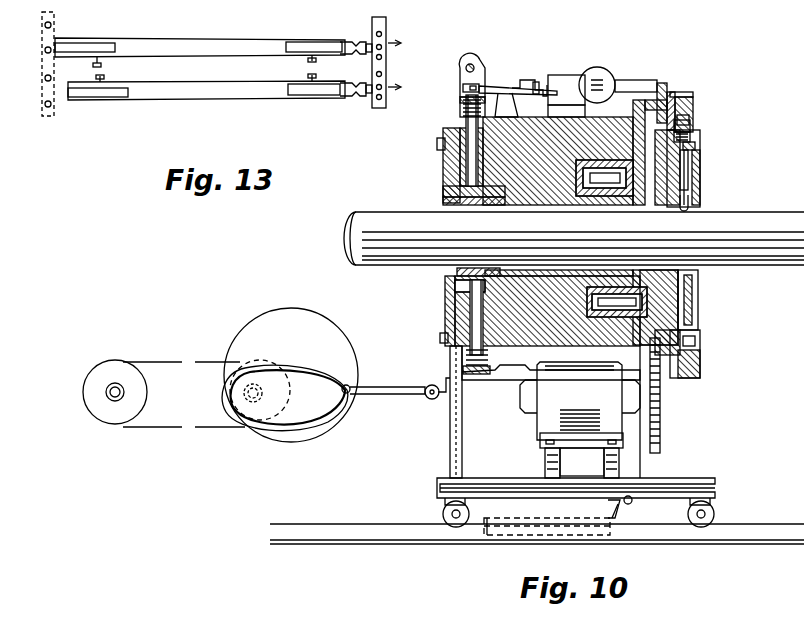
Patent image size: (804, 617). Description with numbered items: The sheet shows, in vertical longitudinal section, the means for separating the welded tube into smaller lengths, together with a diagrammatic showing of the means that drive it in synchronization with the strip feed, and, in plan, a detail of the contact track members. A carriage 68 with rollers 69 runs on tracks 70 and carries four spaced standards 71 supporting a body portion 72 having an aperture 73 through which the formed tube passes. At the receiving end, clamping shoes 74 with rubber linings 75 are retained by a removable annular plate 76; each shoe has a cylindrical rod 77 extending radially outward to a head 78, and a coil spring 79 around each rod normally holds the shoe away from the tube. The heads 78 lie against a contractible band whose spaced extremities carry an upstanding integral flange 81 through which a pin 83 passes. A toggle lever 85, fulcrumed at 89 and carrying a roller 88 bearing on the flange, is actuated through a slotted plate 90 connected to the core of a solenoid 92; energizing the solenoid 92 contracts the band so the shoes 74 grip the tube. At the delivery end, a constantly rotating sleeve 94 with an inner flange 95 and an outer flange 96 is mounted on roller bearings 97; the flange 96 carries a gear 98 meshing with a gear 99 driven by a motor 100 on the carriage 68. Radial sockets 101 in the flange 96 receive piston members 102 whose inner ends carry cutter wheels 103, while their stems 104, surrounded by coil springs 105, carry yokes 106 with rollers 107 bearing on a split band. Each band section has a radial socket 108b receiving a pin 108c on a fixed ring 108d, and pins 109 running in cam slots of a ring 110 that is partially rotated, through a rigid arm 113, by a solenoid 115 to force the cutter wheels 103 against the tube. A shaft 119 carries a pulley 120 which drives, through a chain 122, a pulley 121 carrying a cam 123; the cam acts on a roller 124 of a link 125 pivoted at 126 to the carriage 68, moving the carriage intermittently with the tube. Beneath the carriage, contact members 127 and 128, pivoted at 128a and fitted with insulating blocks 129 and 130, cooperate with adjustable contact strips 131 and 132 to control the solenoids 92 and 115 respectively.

In FIG. 10, the carriage 68 is at (685, 482).
In FIG. 10, the rollers 69 is at (713, 507).
In FIG. 10, the tracks 70 is at (420, 533).
In FIG. 10, the standards 71 is at (450, 464).
In FIG. 10, the body portion 72 is at (445, 320).
In FIG. 10, the aperture 73 is at (455, 272).
In FIG. 10, the shoes 74 is at (452, 284).
In FIG. 10, the rubber linings 75 is at (450, 205).
In FIG. 10, the removable annular plate 76 is at (443, 182).
In FIG. 10, the cylindrical rod 77 is at (443, 163).
In FIG. 10, the head 78 is at (460, 108).
In FIG. 10, the coil spring 79 is at (462, 121).
In FIG. 10, the upstanding integral flange 81 is at (470, 62).
In FIG. 10, the pin 83 is at (465, 70).
In FIG. 10, the lever 85 is at (492, 88).
In FIG. 10, the roller 88 is at (463, 88).
In FIG. 10, the fulcrum 89 is at (510, 97).
In FIG. 10, the plate 90 is at (530, 80).
In FIG. 10, the solenoid 92 is at (563, 75).
In FIG. 10, the sleeve 94 is at (648, 270).
In FIG. 10, the flange 95 is at (582, 197).
In FIG. 10, the flange 96 is at (698, 306).
In FIG. 10, the roller bearings 97 is at (614, 287).
In FIG. 10, the gear 98 is at (695, 338).
In FIG. 10, the gear 99 is at (661, 426).
In FIG. 10, the motor 100 is at (545, 410).
In FIG. 10, the radial sockets 101 is at (698, 160).
In FIG. 10, the piston members 102 is at (690, 176).
In FIG. 10, the cutter wheels 103 is at (690, 203).
In FIG. 10, the stems 104 is at (695, 147).
In FIG. 10, the coil springs 105 is at (690, 137).
In FIG. 10, the yokes 106 is at (690, 126).
In FIG. 10, the rollers 107 is at (689, 118).
In FIG. 10, the radial socket 108b is at (693, 105).
In FIG. 10, the pin 108c is at (680, 97).
In FIG. 10, the ring 108d is at (700, 362).
In FIG. 10, the pins 109 is at (672, 92).
In FIG. 10, the ring 110 is at (660, 83).
In FIG. 10, the rigid arm 113 is at (627, 80).
In FIG. 10, the solenoid 115 is at (600, 68).
In FIG. 10, the shaft 119 is at (124, 394).
In FIG. 10, the pulley 120 is at (143, 387).
In FIG. 10, the pulley 121 is at (268, 362).
In FIG. 10, the chain 122 is at (205, 362).
In FIG. 10, the cam 123 is at (295, 430).
In FIG. 10, the roller 124 is at (352, 387).
In FIG. 10, the link 125 is at (395, 394).
In FIG. 10, the pivot 126 is at (432, 400).
In FIG. 13, the contact member 127 is at (360, 42).
In FIG. 13, the contact member 128 is at (364, 96).
In FIG. 10, the contact member 128 is at (618, 514).
In FIG. 13, the pivot 128a is at (388, 40).
In FIG. 10, the pivot 128a is at (634, 500).
In FIG. 13, the insulating block 129 is at (342, 42).
In FIG. 13, the insulating block 130 is at (346, 96).
In FIG. 10, the insulating block 130 is at (612, 510).
In FIG. 13, the contact strip 131 is at (260, 40).
In FIG. 13, the contact strip 132 is at (255, 89).
In FIG. 10, the contact strip 132 is at (548, 520).